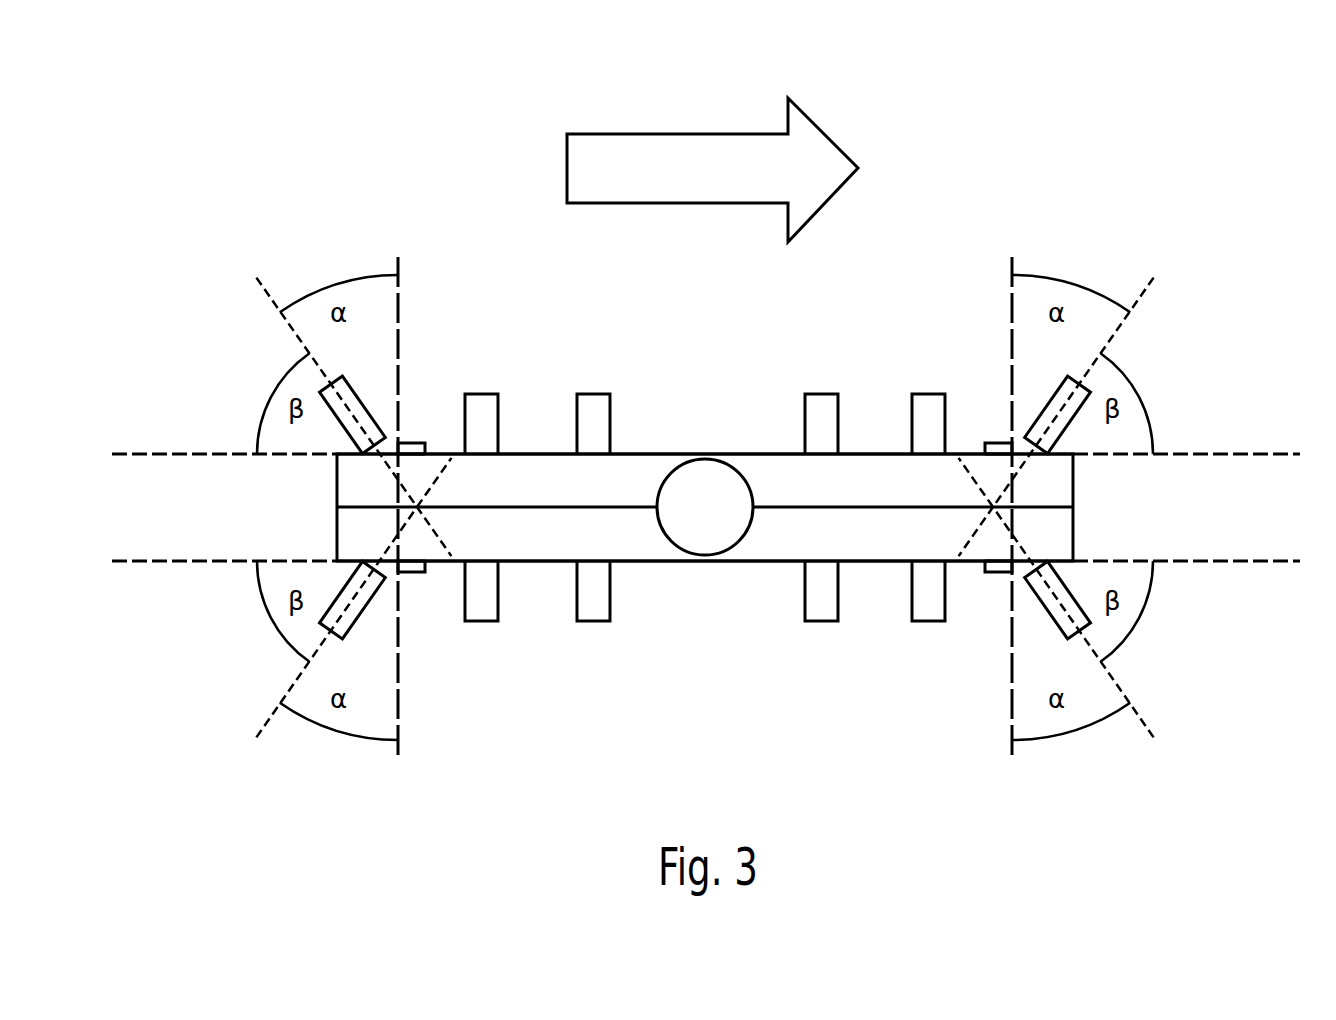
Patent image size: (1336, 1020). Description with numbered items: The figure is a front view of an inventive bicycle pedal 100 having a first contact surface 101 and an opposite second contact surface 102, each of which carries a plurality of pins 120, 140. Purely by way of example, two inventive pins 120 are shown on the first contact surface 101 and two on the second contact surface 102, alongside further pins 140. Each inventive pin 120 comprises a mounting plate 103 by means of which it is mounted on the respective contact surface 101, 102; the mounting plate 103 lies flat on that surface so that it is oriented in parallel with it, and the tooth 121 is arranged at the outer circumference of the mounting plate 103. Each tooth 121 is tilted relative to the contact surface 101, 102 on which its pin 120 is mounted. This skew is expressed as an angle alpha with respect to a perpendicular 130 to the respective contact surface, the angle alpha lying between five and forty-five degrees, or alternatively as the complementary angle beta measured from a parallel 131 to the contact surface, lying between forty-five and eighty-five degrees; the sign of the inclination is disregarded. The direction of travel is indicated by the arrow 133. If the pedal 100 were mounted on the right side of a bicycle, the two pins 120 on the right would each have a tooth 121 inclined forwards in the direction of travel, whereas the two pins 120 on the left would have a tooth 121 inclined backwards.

The pedal 100 is at (1112, 144).
The first contact surface 101 is at (750, 442).
The second contact surface 102 is at (656, 574).
The mounting plate 103 is at (424, 458).
The pin 120 is at (413, 432).
The tooth 121 is at (330, 388).
The perpendicular 130 is at (401, 262).
The parallel 131 is at (113, 452).
The arrow 133 is at (657, 133).
The pins 140 is at (592, 393).